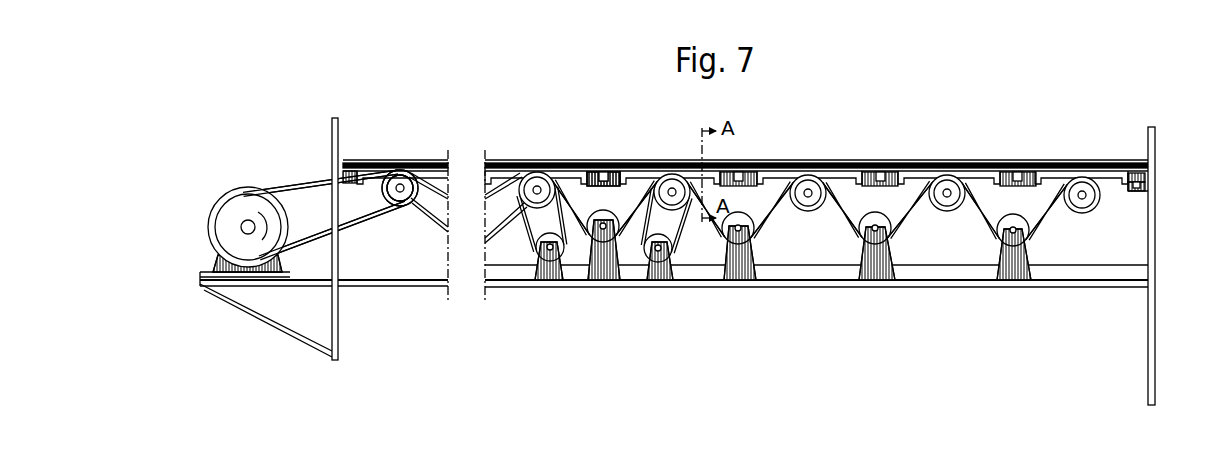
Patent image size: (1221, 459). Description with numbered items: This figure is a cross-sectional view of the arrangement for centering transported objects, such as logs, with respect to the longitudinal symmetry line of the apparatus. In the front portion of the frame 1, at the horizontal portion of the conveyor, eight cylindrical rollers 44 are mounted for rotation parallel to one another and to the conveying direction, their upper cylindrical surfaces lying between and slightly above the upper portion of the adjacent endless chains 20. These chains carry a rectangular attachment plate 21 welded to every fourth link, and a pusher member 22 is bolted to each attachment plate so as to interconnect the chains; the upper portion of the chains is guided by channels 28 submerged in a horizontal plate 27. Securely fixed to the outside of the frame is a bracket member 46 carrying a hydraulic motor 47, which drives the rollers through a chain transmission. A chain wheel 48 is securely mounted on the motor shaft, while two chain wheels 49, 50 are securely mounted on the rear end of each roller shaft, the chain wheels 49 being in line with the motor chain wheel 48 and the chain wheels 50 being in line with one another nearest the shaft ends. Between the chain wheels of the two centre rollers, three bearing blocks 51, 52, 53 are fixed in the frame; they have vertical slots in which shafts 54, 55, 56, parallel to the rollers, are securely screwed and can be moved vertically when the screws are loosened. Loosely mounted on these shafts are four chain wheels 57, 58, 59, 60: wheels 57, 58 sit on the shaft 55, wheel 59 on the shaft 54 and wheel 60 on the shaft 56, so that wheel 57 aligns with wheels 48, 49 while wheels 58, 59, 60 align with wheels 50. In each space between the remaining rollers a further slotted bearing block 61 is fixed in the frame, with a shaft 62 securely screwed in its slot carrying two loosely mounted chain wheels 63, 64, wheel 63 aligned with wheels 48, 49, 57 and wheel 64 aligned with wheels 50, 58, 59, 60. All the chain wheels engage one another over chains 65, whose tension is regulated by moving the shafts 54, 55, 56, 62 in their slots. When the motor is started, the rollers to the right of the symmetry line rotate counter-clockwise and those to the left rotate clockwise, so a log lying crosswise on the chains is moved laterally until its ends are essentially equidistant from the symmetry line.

The frame 1 is at (1156, 133).
The endless chain 20 is at (1145, 183).
The attachment plate 21 is at (1142, 178).
The pusher member 22 is at (1075, 168).
The horizontal plate 27 is at (1123, 188).
The channel 28 is at (1135, 195).
The cylindrical roller 44 is at (398, 208).
The bracket member 46 is at (250, 305).
The hydraulic motor 47 is at (210, 232).
The chain wheel 48 is at (222, 207).
The chain wheel 49 is at (406, 169).
The chain wheel 50 is at (406, 169).
The bearing block 51 is at (542, 281).
The bearing block 52 is at (592, 282).
The bearing block 53 is at (664, 282).
The shaft 54 is at (546, 240).
The shaft 55 is at (611, 219).
The shaft 56 is at (672, 258).
The chain wheel 57 is at (602, 172).
The chain wheel 58 is at (602, 172).
The chain wheel 59 is at (533, 251).
The chain wheel 60 is at (672, 247).
The bearing block 61 is at (749, 265).
The shaft 62 is at (752, 240).
The chain wheel 63 is at (757, 228).
The chain wheel 64 is at (757, 228).
The chain 65 is at (781, 188).